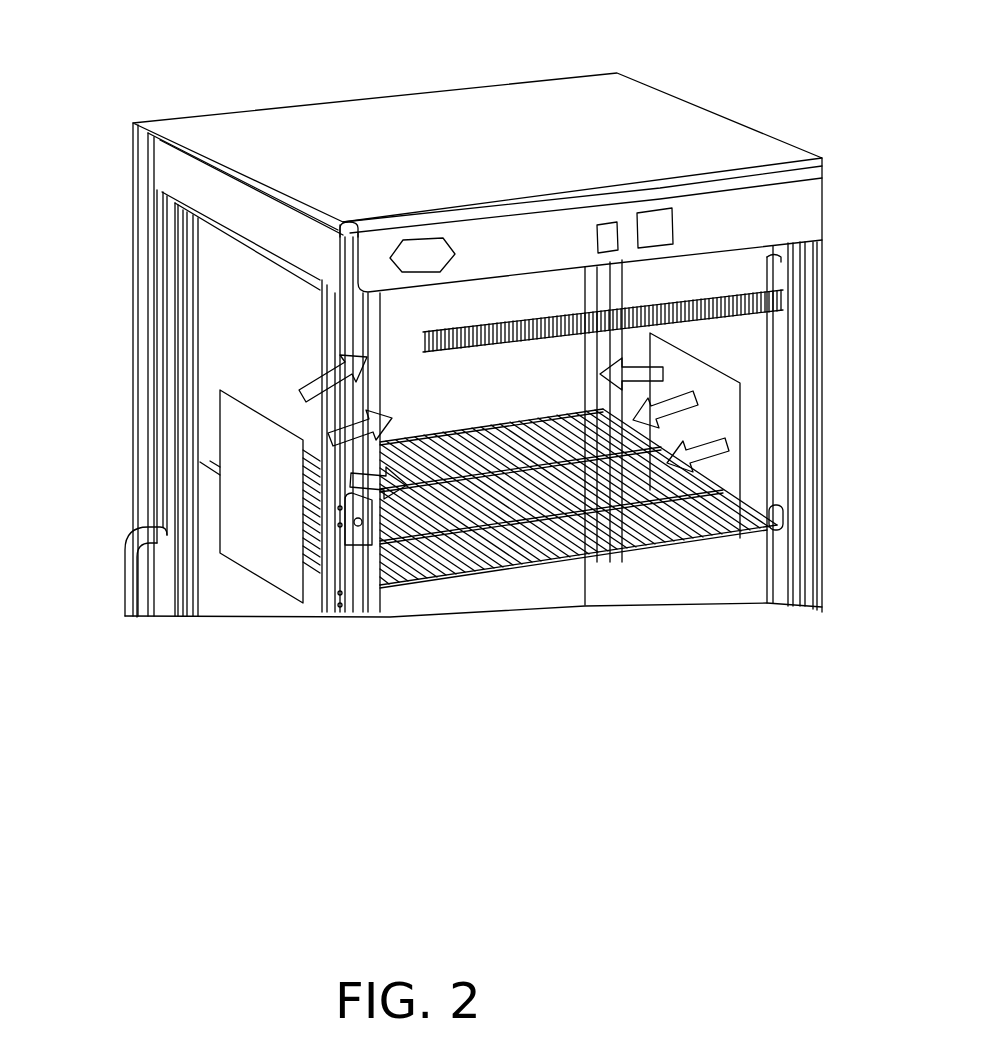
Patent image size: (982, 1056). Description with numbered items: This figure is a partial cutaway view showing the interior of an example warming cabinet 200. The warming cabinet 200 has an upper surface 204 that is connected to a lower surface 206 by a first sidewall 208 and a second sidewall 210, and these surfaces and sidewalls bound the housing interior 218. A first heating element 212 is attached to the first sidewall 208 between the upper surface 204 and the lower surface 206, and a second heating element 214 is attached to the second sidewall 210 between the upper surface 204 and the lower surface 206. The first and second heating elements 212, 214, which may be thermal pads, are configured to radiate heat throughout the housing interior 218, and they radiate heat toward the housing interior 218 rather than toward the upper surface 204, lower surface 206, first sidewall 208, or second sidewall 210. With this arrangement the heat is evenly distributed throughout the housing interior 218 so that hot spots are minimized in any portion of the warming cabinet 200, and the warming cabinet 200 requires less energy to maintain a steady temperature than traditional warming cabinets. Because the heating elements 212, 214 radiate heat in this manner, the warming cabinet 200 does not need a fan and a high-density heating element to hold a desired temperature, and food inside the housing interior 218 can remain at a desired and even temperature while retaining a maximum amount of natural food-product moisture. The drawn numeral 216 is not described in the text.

The warming cabinet 200 is at (168, 77).
The upper surface 204 is at (607, 258).
The lower surface 206 is at (662, 597).
The first sidewall 208 is at (360, 354).
The second sidewall 210 is at (752, 350).
The first heating element 212 is at (258, 514).
The second heating element 214 is at (735, 433).
The side wall 216 is at (145, 345).
The housing interior 218 is at (488, 592).